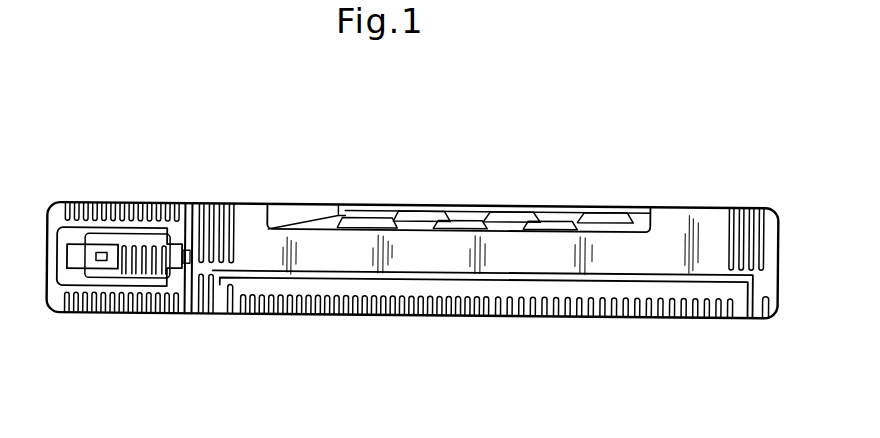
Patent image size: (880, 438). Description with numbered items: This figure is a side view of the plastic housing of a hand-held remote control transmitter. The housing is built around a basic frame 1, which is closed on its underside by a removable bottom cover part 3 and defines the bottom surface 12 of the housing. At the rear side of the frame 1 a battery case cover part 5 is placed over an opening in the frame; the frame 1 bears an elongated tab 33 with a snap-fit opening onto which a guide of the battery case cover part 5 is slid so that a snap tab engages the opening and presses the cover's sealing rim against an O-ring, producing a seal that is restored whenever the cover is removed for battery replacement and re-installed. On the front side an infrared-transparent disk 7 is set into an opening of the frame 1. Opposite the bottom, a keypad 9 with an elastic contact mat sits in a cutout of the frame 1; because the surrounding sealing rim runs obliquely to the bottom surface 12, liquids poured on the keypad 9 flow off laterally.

The basic frame 1 is at (673, 220).
The bottom cover part 3 is at (324, 284).
The battery case cover part 5 is at (118, 207).
The infrared-transparent disk 7 is at (779, 233).
The keypad 9 is at (461, 198).
The bottom surface 12 is at (510, 312).
The elongated tab 33 is at (96, 263).